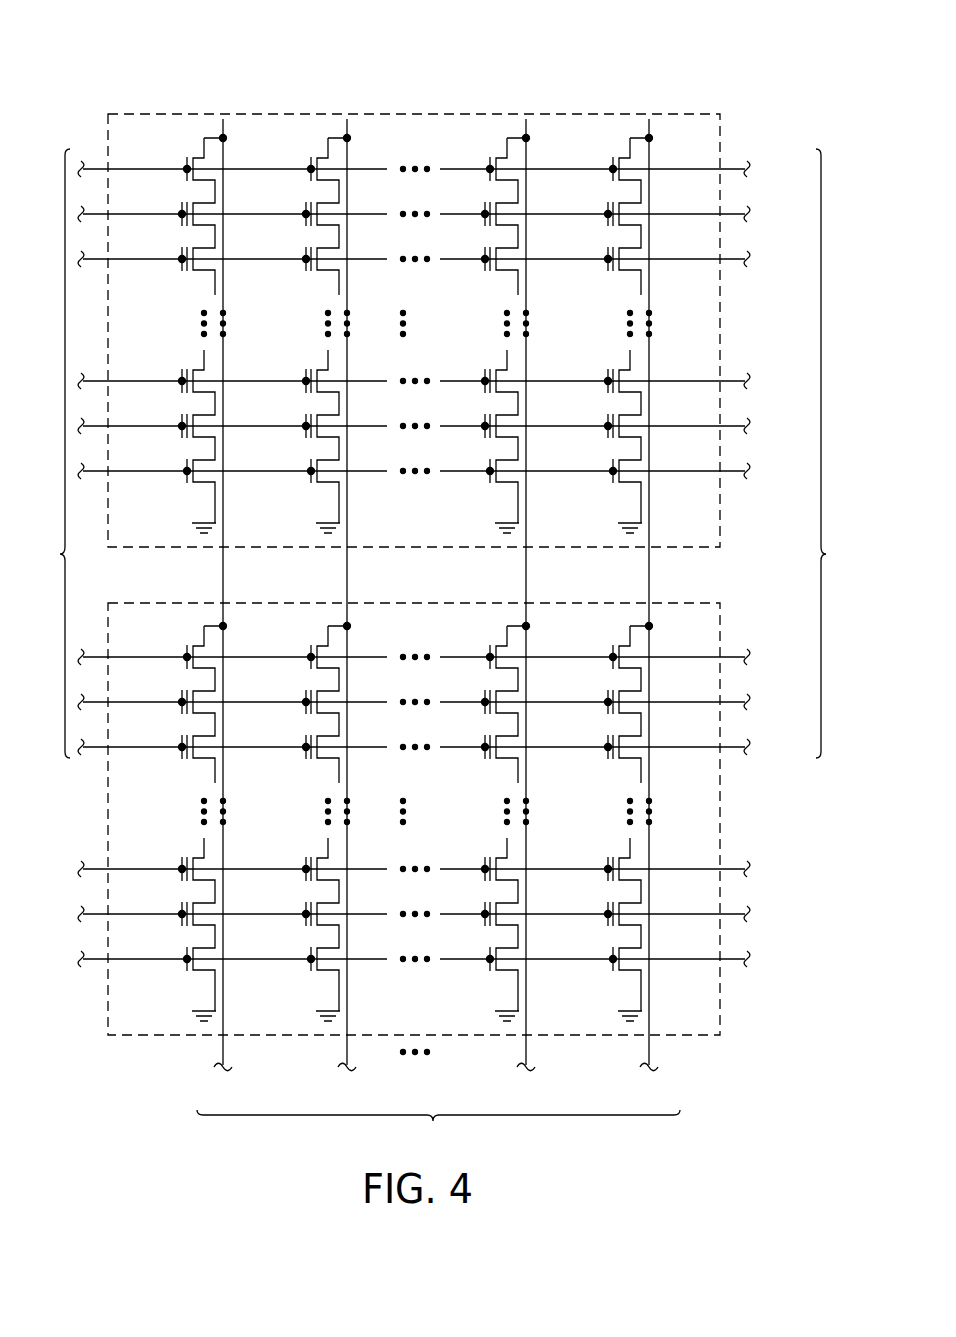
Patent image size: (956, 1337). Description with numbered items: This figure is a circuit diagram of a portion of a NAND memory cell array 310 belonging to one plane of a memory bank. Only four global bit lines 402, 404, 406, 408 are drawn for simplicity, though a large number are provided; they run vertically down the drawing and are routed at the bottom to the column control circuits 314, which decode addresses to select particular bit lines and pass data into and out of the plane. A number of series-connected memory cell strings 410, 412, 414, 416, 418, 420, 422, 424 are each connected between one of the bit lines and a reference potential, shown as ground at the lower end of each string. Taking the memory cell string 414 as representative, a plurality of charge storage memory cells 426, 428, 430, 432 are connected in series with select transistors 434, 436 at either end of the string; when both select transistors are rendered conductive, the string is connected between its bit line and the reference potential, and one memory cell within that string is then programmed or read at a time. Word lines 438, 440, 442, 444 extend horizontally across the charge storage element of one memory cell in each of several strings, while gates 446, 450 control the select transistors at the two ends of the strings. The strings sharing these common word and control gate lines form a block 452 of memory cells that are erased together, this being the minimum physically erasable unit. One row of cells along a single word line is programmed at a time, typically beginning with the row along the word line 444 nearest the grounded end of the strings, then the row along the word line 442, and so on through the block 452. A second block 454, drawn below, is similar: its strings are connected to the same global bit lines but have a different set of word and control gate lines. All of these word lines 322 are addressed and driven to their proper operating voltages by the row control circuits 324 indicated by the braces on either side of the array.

The memory cell array 310 is at (138, 74).
The global bit line 402 is at (226, 156).
The global bit line 404 is at (350, 156).
The global bit line 406 is at (529, 156).
The global bit line 408 is at (652, 155).
The memory cell string 410 is at (187, 353).
The memory cell string 412 is at (310, 353).
The memory cell string 414 is at (490, 305).
The memory cell string 416 is at (612, 353).
The memory cell string 418 is at (187, 841).
The memory cell string 420 is at (310, 841).
The memory cell string 422 is at (489, 841).
The memory cell string 424 is at (612, 841).
The charge storage memory cell 426 is at (488, 203).
The charge storage memory cell 428 is at (488, 248).
The charge storage memory cell 430 is at (488, 369).
The charge storage memory cell 432 is at (488, 414).
The select transistor 434 is at (490, 459).
The select transistor 436 is at (497, 157).
The word line 438 is at (728, 212).
The word line 440 is at (728, 257).
The word line 442 is at (728, 379).
The word line 444 is at (728, 424).
The control gate line 446 is at (728, 167).
The control gate line 450 is at (728, 469).
The block 452 is at (392, 98).
The second block 454 is at (499, 1046).
The word lines 322 is at (42, 453).
The row control circuits 324 is at (831, 453).
The column control circuits 314 is at (438, 1132).